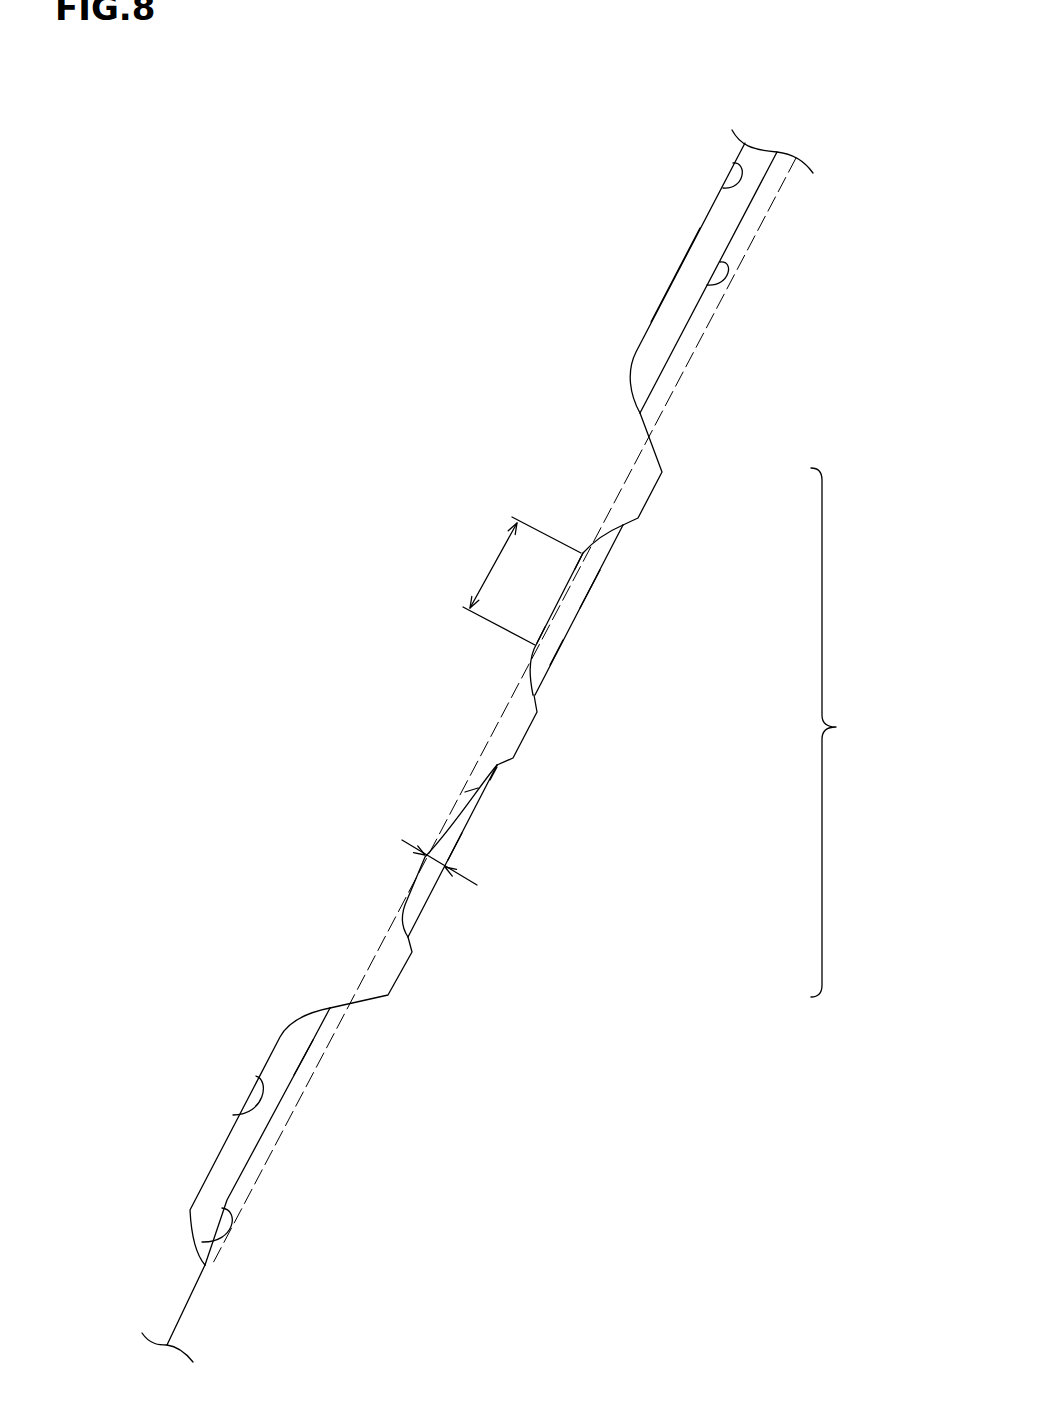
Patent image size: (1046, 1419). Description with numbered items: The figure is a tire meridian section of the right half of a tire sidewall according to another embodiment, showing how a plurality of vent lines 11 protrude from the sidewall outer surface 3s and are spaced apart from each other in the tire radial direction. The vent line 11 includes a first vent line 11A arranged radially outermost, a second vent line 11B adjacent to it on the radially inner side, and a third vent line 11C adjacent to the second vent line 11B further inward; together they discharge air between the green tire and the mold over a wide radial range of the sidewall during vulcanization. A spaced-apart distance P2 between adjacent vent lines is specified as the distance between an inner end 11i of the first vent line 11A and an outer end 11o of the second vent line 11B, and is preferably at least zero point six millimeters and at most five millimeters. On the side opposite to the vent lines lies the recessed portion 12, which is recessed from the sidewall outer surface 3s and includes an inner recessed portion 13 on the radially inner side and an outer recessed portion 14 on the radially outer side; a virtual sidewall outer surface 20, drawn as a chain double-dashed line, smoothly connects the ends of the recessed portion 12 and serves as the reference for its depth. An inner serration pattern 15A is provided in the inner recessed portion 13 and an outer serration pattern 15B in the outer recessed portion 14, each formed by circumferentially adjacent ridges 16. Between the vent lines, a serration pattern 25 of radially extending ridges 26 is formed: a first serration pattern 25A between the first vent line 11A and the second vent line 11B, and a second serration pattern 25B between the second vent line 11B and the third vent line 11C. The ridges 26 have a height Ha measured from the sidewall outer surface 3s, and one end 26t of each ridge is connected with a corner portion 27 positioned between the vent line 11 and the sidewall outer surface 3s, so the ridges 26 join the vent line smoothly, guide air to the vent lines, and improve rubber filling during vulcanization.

The sidewall outer surface 3s is at (199, 1318).
The vent line 11 is at (607, 710).
The first vent line 11A is at (666, 497).
The second vent line 11B is at (538, 741).
The third vent line 11C is at (411, 981).
The inner end 11i is at (584, 551).
The outer end 11o is at (534, 646).
The recessed portion 12 is at (723, 188).
The inner recessed portion 13 is at (230, 1154).
The outer recessed portion 14 is at (723, 221).
The inner serration pattern 15A is at (302, 1083).
The outer serration pattern 15B is at (661, 318).
The ridges 16 is at (707, 285).
The virtual sidewall outer surface 20 is at (398, 921).
The serration pattern 25 is at (619, 561).
The first serration pattern 25A is at (597, 600).
The second serration pattern 25B is at (462, 860).
The ridges 26 is at (562, 640).
The one end 26t is at (465, 792).
The corner portion 27 is at (490, 780).
The height Ha is at (437, 862).
The spaced-apart distance P2 is at (514, 581).